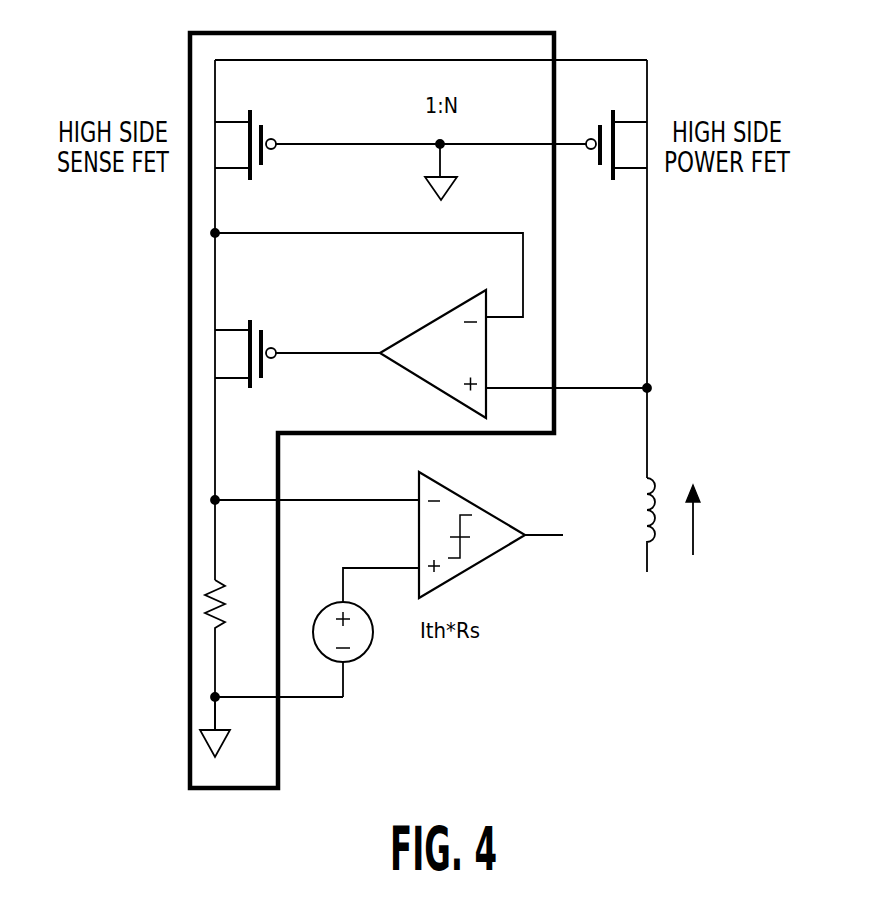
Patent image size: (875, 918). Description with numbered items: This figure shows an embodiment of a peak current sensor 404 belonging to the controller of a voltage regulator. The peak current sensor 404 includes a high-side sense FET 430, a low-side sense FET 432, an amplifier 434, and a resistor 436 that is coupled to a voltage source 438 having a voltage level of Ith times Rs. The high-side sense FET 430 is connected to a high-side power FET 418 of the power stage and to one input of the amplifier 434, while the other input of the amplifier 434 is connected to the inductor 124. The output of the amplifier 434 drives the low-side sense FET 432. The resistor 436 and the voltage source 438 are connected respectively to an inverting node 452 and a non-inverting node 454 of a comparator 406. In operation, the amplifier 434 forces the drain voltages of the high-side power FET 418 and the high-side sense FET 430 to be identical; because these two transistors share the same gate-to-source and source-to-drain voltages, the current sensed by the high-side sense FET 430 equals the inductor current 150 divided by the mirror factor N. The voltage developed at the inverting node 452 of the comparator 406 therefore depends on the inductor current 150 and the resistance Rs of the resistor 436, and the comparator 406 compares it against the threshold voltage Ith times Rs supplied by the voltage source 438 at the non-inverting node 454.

The peak current sensor 404 is at (190, 357).
The high-side sense FET 430 is at (263, 133).
The high-side power FET 418 is at (632, 177).
The low-side sense FET 432 is at (259, 346).
The amplifier 434 is at (430, 382).
The inductor 124 is at (650, 478).
The inductor current 150 is at (693, 525).
The inverting node/terminal 452 is at (419, 494).
The non-inverting node/terminal 454 is at (419, 563).
The comparator 406 is at (490, 558).
The resistor 436 is at (225, 600).
The voltage source 438 is at (358, 658).